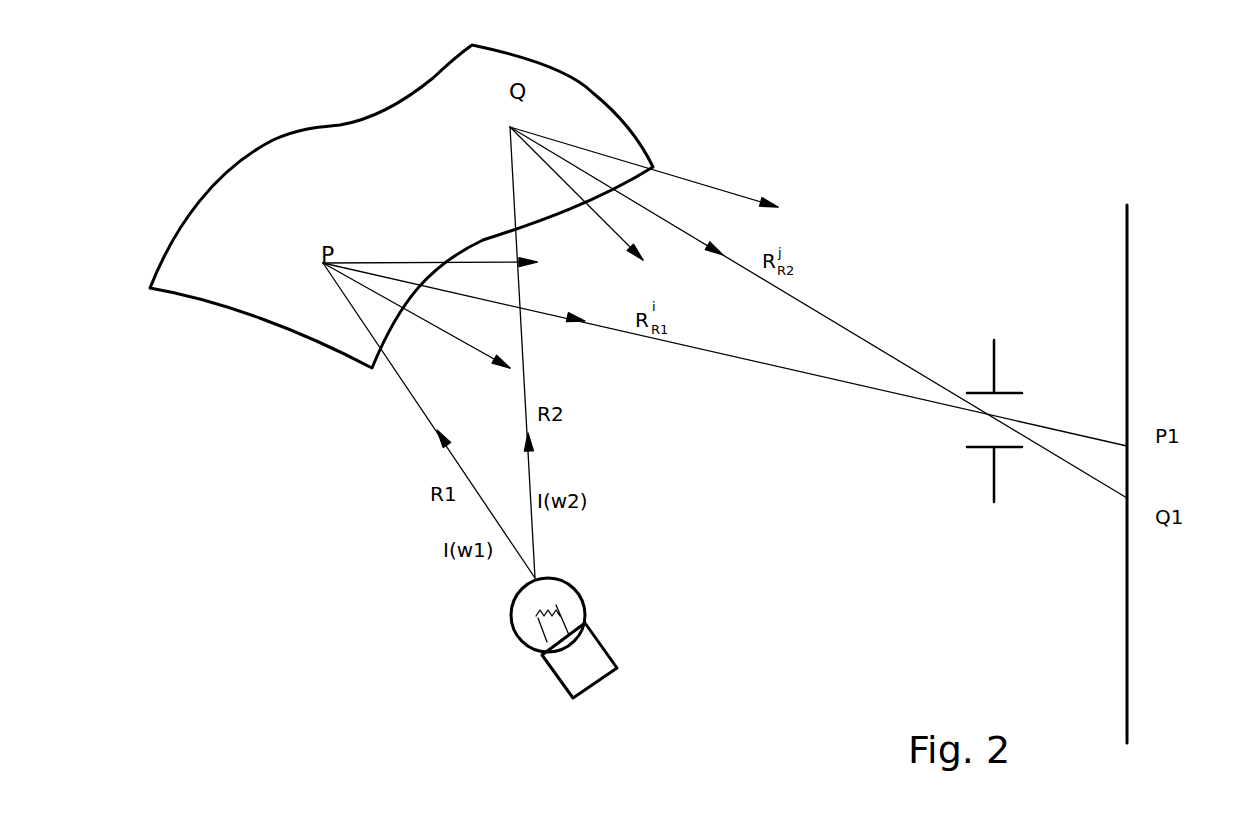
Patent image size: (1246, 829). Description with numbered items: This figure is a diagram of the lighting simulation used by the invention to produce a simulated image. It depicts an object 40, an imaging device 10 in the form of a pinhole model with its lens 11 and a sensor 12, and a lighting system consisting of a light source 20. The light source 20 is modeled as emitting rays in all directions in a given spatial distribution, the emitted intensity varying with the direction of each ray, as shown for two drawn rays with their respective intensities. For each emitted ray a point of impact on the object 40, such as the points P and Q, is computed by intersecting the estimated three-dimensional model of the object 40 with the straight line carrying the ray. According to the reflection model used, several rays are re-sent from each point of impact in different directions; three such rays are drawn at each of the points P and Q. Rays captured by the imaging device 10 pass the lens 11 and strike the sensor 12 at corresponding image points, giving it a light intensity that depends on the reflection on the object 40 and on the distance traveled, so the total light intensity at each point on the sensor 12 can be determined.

The imaging device 10 is at (1157, 176).
The lens 11 is at (993, 357).
The sensor 12 is at (1127, 368).
The light source 20 is at (587, 615).
The object 40 is at (353, 123).